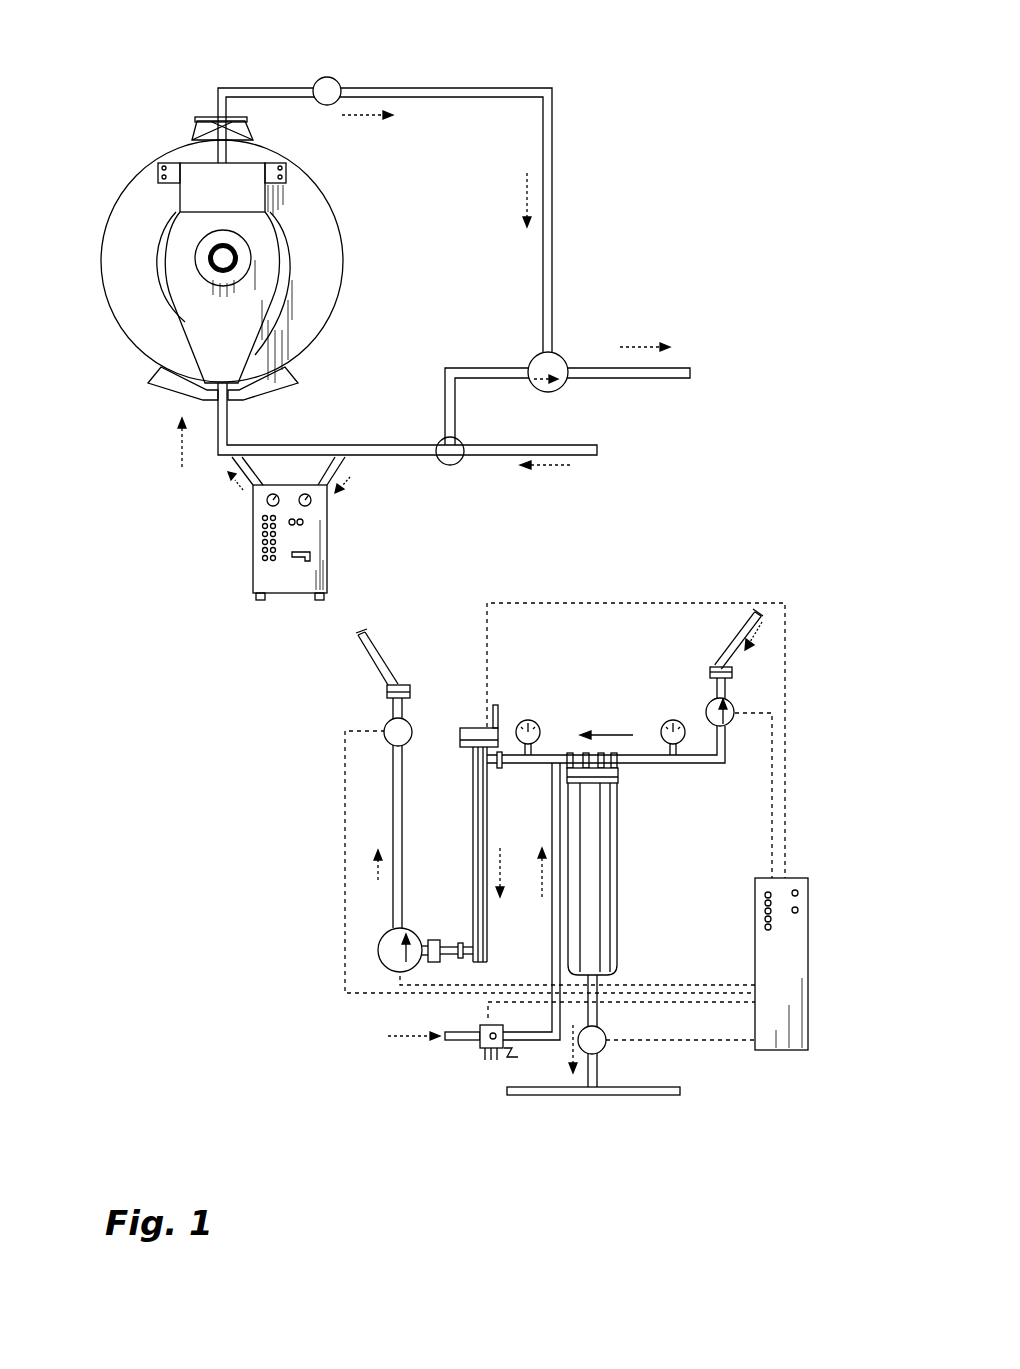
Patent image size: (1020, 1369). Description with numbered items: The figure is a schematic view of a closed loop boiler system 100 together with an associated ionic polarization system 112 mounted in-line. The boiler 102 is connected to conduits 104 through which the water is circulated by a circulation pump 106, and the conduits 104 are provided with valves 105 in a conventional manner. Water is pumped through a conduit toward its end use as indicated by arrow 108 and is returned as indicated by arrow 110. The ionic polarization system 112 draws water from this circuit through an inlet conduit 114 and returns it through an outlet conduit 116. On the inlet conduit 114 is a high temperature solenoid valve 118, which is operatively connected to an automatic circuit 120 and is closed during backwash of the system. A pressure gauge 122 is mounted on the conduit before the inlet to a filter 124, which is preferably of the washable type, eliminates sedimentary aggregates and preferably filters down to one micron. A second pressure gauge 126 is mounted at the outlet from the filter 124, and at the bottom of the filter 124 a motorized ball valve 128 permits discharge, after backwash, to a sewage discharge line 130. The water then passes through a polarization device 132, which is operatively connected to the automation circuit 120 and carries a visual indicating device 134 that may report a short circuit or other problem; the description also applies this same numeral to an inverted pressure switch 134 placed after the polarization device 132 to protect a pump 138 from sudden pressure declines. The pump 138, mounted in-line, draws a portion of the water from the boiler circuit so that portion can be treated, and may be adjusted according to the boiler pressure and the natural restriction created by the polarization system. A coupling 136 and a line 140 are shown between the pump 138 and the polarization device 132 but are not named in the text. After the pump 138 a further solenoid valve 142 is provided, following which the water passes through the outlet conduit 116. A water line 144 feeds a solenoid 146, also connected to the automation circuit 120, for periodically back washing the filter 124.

The closed loop boiler system 100 is at (158, 86).
The boiler 102 is at (140, 160).
The conduits 104 is at (487, 86).
The valves 105 is at (327, 76).
The circulation pump 106 is at (566, 353).
The arrow 108 is at (642, 345).
The arrow 110 is at (543, 466).
The ionic polarization system 112 is at (253, 512).
The inlet conduit 114 is at (345, 463).
The outlet conduit 116 is at (230, 459).
The high temperature solenoid valve 118 is at (735, 703).
The automatic circuit 120 is at (808, 917).
The pressure gauge 122 is at (662, 728).
The filter 124 is at (620, 865).
The second pressure gauge 126 is at (535, 722).
The motorized ball valve 128 is at (603, 1050).
The sewage discharge line 130 is at (563, 1097).
The polarization device 132 is at (462, 730).
The visual indicating device 134 is at (496, 706).
The coupling 136 is at (437, 940).
The pump 138 is at (385, 965).
The line 140 is at (393, 815).
The further solenoid valve 142 is at (385, 729).
The water line 144 is at (457, 1040).
The solenoid 146 is at (478, 1050).